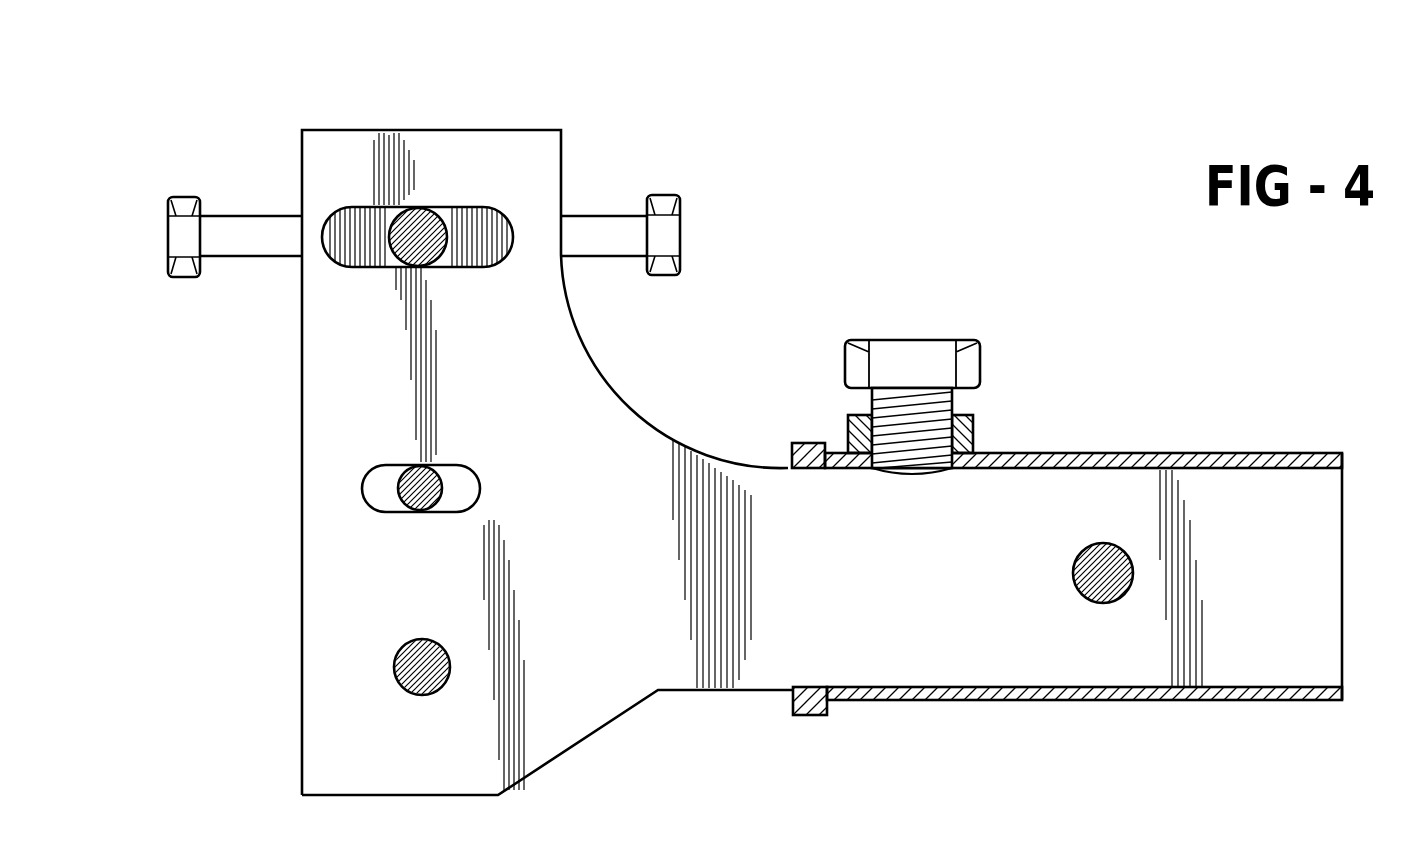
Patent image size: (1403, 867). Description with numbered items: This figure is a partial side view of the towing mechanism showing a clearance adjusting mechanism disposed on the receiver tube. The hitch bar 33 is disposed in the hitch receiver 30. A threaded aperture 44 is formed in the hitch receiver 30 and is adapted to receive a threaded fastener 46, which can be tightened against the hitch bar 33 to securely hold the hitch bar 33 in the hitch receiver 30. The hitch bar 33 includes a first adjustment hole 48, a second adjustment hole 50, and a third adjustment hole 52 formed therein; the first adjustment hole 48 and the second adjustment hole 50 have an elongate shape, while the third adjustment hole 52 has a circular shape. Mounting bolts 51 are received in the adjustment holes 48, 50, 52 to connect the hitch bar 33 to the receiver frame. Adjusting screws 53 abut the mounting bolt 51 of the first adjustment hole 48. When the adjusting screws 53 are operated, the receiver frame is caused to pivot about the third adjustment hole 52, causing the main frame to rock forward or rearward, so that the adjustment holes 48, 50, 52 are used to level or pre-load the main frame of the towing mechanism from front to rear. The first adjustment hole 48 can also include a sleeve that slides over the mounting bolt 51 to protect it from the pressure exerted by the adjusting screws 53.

The hitch receiver 30 is at (940, 701).
The hitch bar 33 is at (425, 130).
The threaded aperture 44 is at (880, 415).
The threaded fastener 46 is at (903, 340).
The first adjustment hole 48 is at (350, 212).
The second adjustment hole 50 is at (366, 492).
The mounting bolts 51 is at (405, 212).
The third adjustment hole 52 is at (394, 672).
The adjusting screws 53 is at (168, 238).